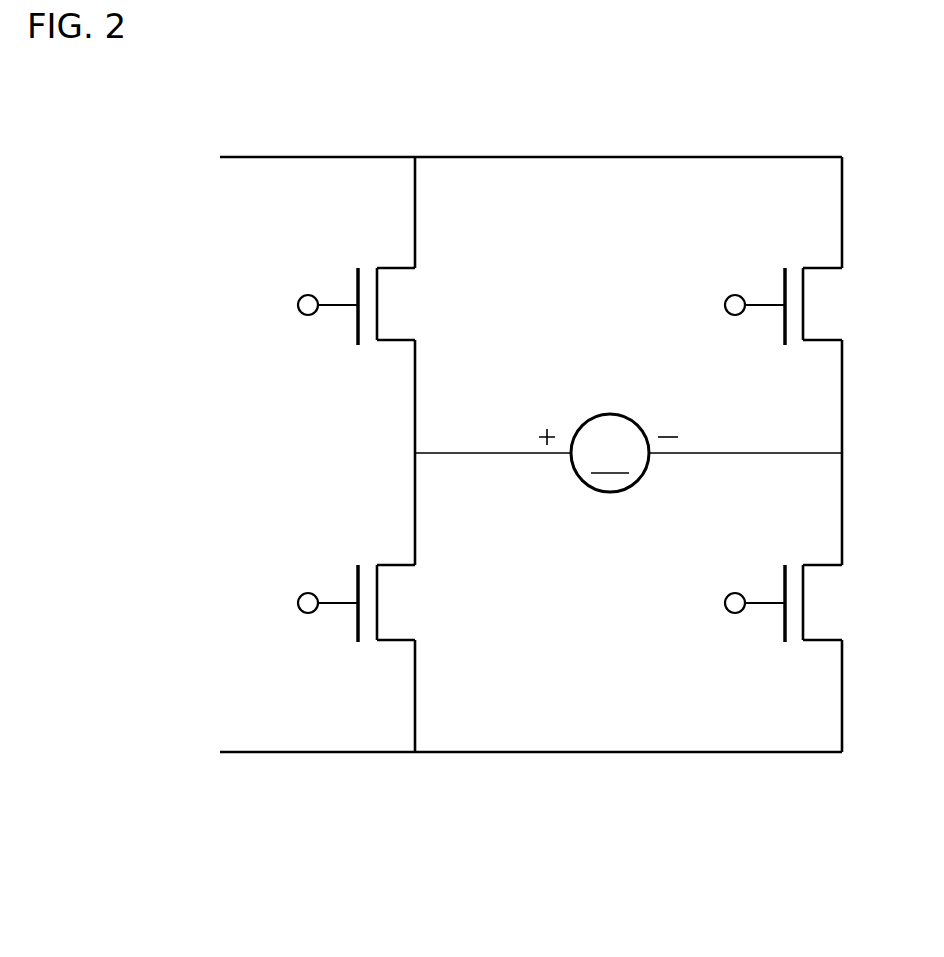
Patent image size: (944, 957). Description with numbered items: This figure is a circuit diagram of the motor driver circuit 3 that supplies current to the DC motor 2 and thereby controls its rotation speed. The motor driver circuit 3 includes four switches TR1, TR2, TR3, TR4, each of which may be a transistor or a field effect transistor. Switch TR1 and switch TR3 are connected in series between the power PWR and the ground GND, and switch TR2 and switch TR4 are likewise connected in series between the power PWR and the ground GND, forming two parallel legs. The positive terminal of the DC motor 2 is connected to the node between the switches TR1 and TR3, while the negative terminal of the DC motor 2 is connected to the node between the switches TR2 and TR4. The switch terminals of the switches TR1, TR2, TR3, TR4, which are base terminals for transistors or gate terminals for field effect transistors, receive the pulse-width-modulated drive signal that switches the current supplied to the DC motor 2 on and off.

The DC motor 2 is at (598, 492).
The motor driver circuit 3 is at (702, 806).
The switch TR1 is at (322, 299).
The switch TR2 is at (747, 299).
The switch TR3 is at (322, 597).
The switch TR4 is at (745, 597).
The power PWR is at (468, 149).
The ground GND is at (469, 754).